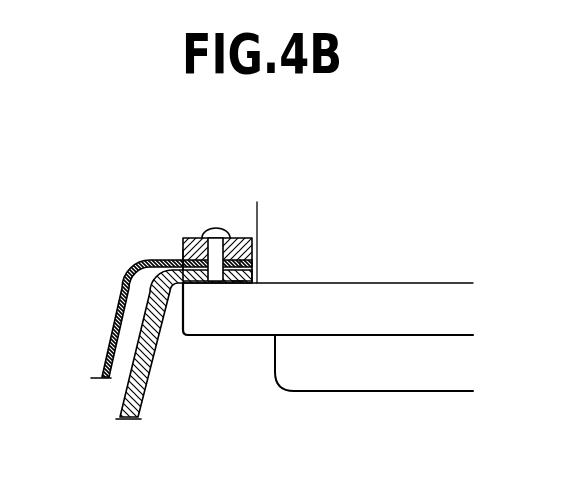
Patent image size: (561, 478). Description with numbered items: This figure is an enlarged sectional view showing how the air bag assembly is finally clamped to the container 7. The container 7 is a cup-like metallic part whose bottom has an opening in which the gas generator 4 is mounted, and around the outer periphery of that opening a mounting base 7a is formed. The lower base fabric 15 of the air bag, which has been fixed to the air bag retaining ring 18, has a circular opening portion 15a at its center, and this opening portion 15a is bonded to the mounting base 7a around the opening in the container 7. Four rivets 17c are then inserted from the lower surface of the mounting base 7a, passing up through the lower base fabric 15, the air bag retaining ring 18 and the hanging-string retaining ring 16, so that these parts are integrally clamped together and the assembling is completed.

The gas generator 4 is at (363, 250).
The container 7 is at (140, 413).
The mounting base 7a is at (238, 285).
The lower base fabric 15 is at (112, 318).
The opening portion 15a is at (252, 265).
The hanging-string retaining ring 16 is at (199, 239).
The rivets 17c is at (219, 231).
The air bag retaining ring 18 is at (187, 256).